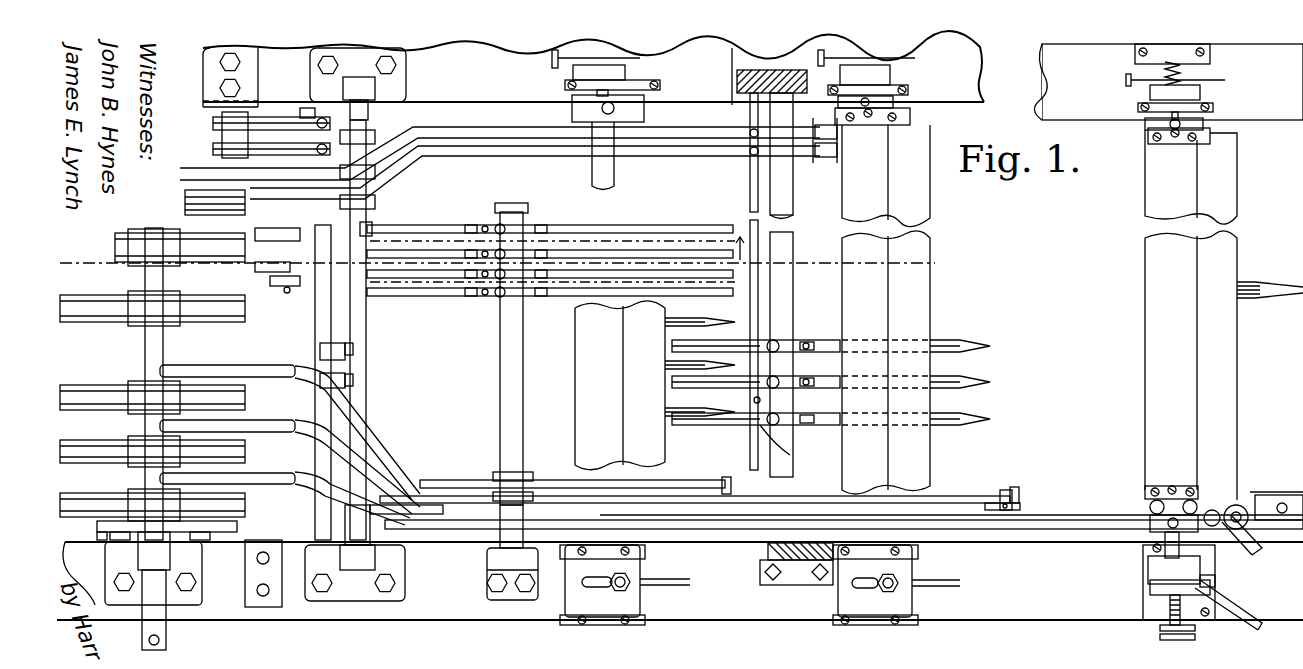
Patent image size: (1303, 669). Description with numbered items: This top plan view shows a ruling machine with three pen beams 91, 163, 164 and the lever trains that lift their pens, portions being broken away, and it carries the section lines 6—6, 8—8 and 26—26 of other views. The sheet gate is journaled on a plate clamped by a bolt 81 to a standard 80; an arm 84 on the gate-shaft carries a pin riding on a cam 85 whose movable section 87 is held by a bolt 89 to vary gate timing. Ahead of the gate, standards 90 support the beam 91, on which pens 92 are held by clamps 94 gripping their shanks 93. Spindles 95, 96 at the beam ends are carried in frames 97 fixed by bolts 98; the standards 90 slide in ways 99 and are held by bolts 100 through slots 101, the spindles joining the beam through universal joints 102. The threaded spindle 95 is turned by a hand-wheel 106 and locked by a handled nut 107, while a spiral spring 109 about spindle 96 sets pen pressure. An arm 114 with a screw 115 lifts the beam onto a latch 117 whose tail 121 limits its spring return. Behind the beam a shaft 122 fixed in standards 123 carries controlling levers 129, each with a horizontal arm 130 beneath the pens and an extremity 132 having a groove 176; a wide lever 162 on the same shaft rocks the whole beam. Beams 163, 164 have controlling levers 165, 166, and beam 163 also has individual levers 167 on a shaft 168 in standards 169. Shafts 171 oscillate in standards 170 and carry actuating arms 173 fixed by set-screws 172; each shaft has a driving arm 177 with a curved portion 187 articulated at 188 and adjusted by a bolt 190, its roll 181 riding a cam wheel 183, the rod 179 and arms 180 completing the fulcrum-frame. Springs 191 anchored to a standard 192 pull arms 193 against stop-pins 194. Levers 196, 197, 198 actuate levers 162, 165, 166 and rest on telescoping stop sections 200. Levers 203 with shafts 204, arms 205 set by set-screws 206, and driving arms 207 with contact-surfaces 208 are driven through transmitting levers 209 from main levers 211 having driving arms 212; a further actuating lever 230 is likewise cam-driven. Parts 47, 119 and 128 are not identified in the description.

The section line 6— 6 is at (80, 285).
The section line 8— 8 is at (739, 245).
The section line 26— 26 is at (1213, 510).
The shaft 47 is at (650, 565).
The standard 80 is at (140, 552).
The bolt 81 is at (551, 239).
The arm 84 is at (210, 545).
The cam 85 is at (110, 520).
The movable cam section 87 is at (165, 570).
The bolt 89 is at (105, 536).
The standards 90 is at (720, 85).
The pen beam 91 is at (576, 353).
The pens 92 is at (720, 360).
The pen shank 93 is at (665, 348).
The clamp 94 is at (684, 440).
The spindle 95 is at (1195, 630).
The spindle 96 is at (568, 87).
The frames 97 is at (560, 62).
The bolts 98 is at (1150, 615).
The ways 99 is at (1140, 80).
The bolts 100 is at (635, 590).
The slots 101 is at (590, 585).
The universal pivotal joints 102 is at (575, 108).
The hand-wheel 106 is at (1185, 640).
The handled nut 107 is at (1215, 585).
The spiral spring 109 is at (1240, 605).
The arm 114 is at (1276, 482).
The screw 115 is at (1240, 505).
The latch 117 is at (1150, 520).
The rod 119 is at (1130, 82).
The latch tail 121 is at (1248, 552).
The shaft 122 is at (522, 445).
The standards 123 is at (495, 565).
The pin 128 is at (1000, 496).
The controlling levers 129 is at (548, 250).
The lever arm 130 is at (643, 250).
The lever extremity 132 is at (460, 226).
The special controlling lever 162 is at (700, 475).
The second pen beam 163 is at (886, 309).
The third pen beam 164 is at (1160, 305).
The controlling lever 165 is at (990, 503).
The controlling lever 166 is at (1055, 518).
The controlling levers 167 is at (822, 375).
The shaft 168 is at (780, 280).
The standards 169 is at (730, 72).
The standards 170 is at (380, 630).
The transverse shafts 171 is at (352, 348).
The set-screws 172 is at (400, 220).
The actuating arms 173 is at (400, 262).
The grooves 176 is at (455, 280).
The driving arm 177 is at (348, 405).
The rod 179 is at (318, 325).
The arms 180 is at (360, 108).
The anti-friction roll 181 is at (135, 265).
The cam wheels 183 is at (103, 322).
The curved portion 187 is at (215, 320).
The articulation 188 is at (262, 234).
The bolt 190 is at (335, 455).
The spiral springs 191 is at (235, 158).
The standard 192 is at (215, 128).
The arms 193 is at (275, 135).
The stop-pins 194 is at (225, 118).
The actuating lever 196 is at (360, 455).
The actuating lever 197 is at (385, 478).
The actuating lever 198 is at (430, 496).
The upper telescoping sections 200 is at (255, 540).
The levers 203 is at (795, 445).
The shaft 204 is at (750, 200).
The actuating arms 205 is at (725, 390).
The set-screws 206 is at (762, 435).
The driving arms 207 is at (807, 160).
The contact-surface 208 is at (853, 129).
The transmitting levers 209 is at (698, 150).
The main actuating levers 211 is at (400, 160).
The driving arm 212 is at (285, 180).
The actuating lever 230 is at (430, 545).